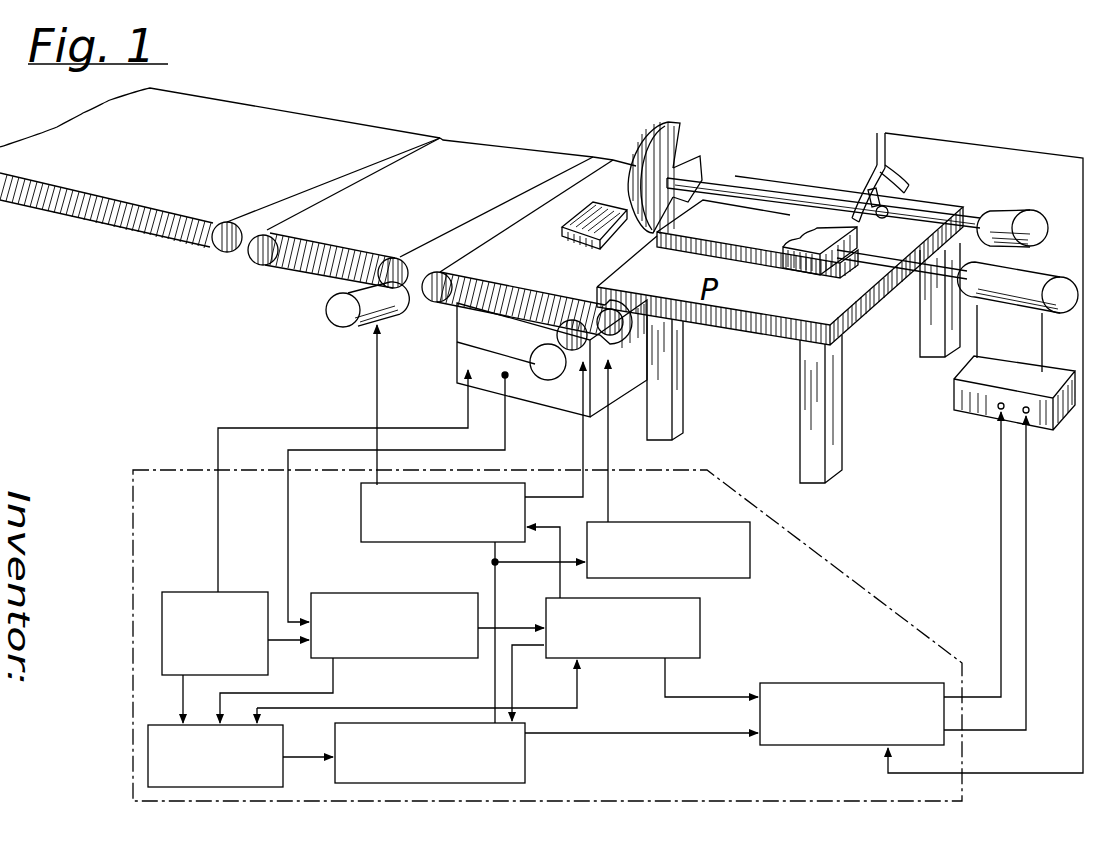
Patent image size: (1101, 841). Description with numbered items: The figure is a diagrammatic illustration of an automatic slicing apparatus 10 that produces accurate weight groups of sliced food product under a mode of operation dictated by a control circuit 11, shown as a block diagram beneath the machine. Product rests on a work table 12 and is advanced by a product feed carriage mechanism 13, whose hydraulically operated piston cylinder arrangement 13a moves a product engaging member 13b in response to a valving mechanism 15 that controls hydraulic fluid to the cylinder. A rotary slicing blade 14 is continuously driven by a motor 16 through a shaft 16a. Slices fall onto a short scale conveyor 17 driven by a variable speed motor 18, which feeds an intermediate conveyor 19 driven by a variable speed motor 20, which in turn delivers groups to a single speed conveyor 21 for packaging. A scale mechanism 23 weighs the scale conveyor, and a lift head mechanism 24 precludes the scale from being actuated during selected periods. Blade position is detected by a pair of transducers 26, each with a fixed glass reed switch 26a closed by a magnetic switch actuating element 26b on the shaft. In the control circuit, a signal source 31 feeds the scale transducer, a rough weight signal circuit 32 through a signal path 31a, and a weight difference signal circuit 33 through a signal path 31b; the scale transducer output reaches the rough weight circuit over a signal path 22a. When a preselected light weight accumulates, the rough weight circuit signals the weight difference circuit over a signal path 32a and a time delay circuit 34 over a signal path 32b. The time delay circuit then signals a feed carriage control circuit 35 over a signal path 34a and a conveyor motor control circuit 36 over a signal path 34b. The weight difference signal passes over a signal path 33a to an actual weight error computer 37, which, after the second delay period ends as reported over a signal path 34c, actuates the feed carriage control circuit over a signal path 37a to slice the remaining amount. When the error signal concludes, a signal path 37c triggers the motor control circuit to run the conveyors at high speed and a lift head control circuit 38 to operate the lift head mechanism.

The automatic slicing apparatus 10 is at (366, 80).
The control circuit 11 is at (130, 482).
The work table 12 is at (770, 340).
The product feed carriage mechanism 13 is at (1043, 262).
The piston cylinder arrangement 13a is at (1018, 306).
The product engaging member 13b is at (804, 274).
The rotary slicing blade 14 is at (678, 126).
The valving mechanism 15 is at (983, 404).
The motor 16 is at (1002, 213).
The shaft 16a is at (930, 213).
The scale conveyor 17 is at (608, 160).
The variable speed motor 18 is at (565, 333).
The intermediate conveyor 19 is at (478, 145).
The variable speed motor 20 is at (326, 306).
The single speed conveyor 21 is at (245, 117).
The signal path 22a is at (288, 513).
The scale mechanism 23 is at (562, 404).
The lift head mechanism 24 is at (467, 340).
The transducers 26 is at (856, 185).
The glass reed switch 26a is at (873, 165).
The magnetic switch actuating element 26b is at (876, 213).
The signal source 31 is at (173, 592).
The signal path 31a is at (290, 642).
The signal path 31b is at (183, 693).
The rough weight signal circuit 32 is at (375, 593).
The signal path 32a is at (333, 680).
The signal path 32b is at (513, 625).
The weight difference signal circuit 33 is at (148, 760).
The signal path 33a is at (310, 758).
The time delay circuit 34 is at (700, 614).
The signal path 34a is at (712, 697).
The signal path 34b is at (556, 523).
The signal path 34c is at (518, 693).
The feed carriage control circuit 35 is at (835, 683).
The conveyor motor control circuit 36 is at (361, 520).
The actual weight error computer 37 is at (525, 762).
The signal path 37a is at (680, 734).
The signal path 37c is at (498, 562).
The lift head control circuit 38 is at (700, 522).